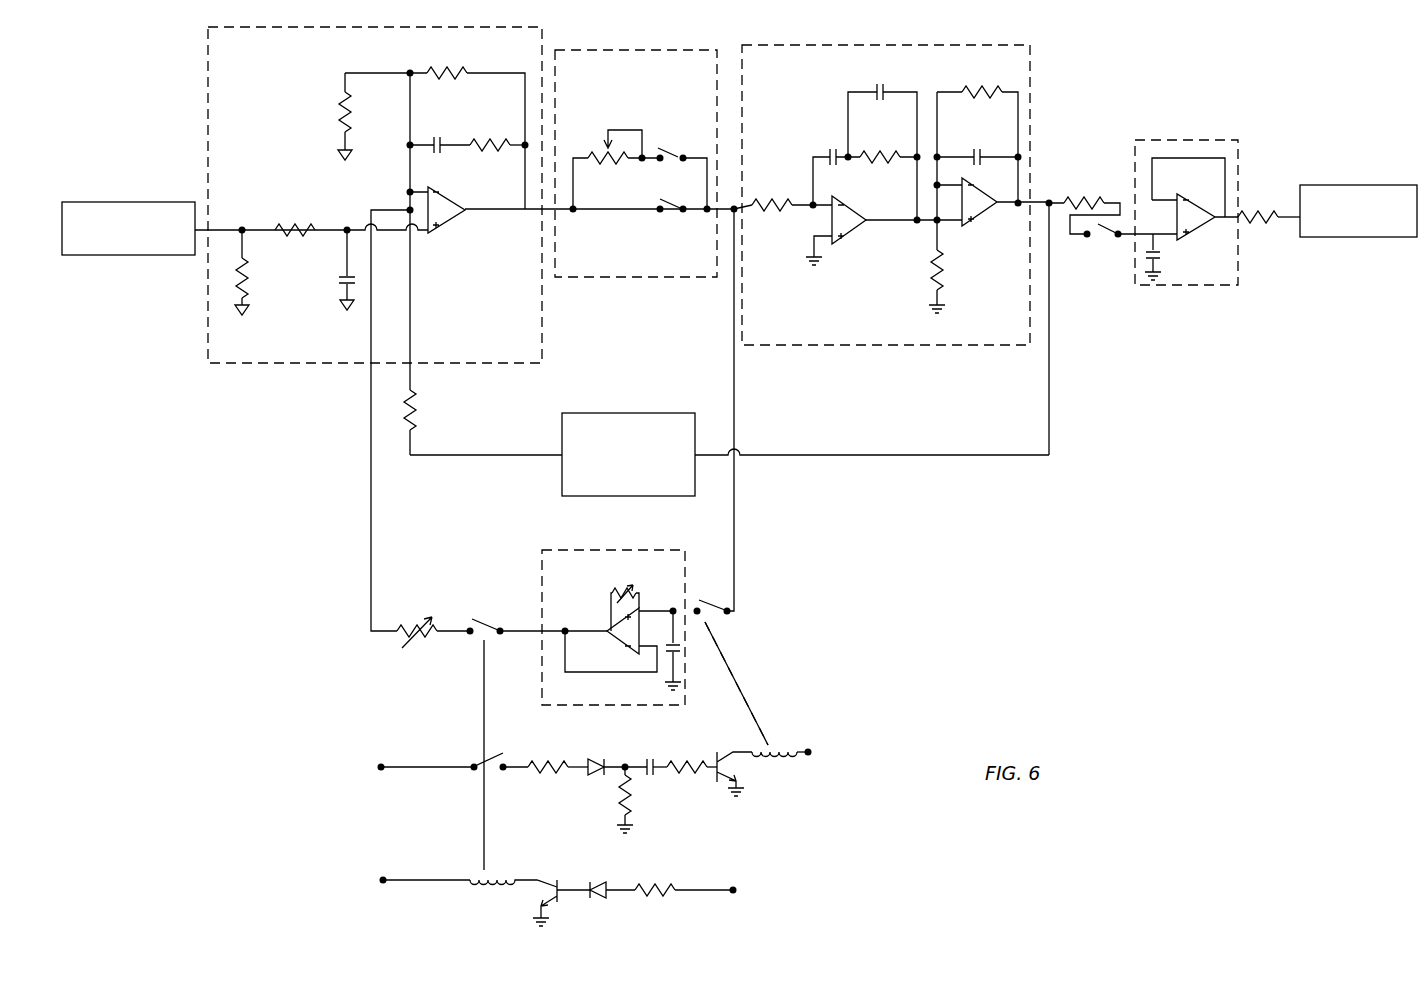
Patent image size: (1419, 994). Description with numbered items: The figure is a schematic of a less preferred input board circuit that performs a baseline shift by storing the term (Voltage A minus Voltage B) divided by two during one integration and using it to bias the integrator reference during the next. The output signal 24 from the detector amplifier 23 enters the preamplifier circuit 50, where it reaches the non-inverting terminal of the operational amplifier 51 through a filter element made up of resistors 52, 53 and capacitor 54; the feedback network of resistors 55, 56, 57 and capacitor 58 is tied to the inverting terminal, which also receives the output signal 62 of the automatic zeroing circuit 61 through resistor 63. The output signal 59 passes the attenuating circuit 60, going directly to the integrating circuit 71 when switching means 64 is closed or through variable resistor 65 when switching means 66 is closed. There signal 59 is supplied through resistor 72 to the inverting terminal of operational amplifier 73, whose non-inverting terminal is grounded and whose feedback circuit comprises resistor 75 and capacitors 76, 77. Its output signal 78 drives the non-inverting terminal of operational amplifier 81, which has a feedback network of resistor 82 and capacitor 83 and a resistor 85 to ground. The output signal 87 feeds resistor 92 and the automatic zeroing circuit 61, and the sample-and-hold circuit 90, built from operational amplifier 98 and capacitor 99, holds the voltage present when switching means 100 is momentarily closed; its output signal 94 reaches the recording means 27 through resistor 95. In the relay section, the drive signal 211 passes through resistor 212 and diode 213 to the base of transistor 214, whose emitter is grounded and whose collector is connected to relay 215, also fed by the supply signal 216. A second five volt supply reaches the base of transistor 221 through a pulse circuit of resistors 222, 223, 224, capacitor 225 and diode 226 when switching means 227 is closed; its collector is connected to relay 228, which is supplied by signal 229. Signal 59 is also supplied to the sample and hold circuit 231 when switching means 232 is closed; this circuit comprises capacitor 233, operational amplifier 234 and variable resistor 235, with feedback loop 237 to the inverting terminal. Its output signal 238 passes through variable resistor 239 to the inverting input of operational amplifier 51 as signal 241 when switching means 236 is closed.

The detector amplifier 23 is at (152, 202).
The output signal 24 is at (238, 228).
The recording means 27 is at (1350, 185).
The preamplifier circuit 50 is at (208, 95).
The operational amplifier 51 is at (445, 226).
The resistor 52 is at (245, 280).
The resistor 53 is at (295, 224).
The capacitor 54 is at (347, 288).
The resistor 55 is at (345, 125).
The resistor 56 is at (447, 70).
The resistor 57 is at (490, 140).
The capacitor 58 is at (436, 140).
The output signal 59 is at (495, 212).
The attenuating circuit 60 is at (630, 50).
The automatic zeroing circuit 61 is at (640, 413).
The output signal 62 is at (452, 458).
The resistor 63 is at (425, 412).
The switching means 64 is at (678, 212).
The variable resistor 65 is at (603, 152).
The switching means 66 is at (672, 150).
The integrating circuit 71 is at (905, 45).
The resistor 72 is at (770, 200).
The operational amplifier 73 is at (848, 240).
The resistor 75 is at (890, 165).
The capacitor 76 is at (870, 88).
The capacitor 77 is at (825, 150).
The output signal 78 is at (890, 228).
The operational amplifier 81 is at (982, 222).
The resistor 82 is at (960, 88).
The capacitor 83 is at (975, 150).
The resistor 85 is at (935, 278).
The output signal 87 is at (1048, 198).
The sample-and-hold circuit 90 is at (1227, 134).
The resistor 92 is at (1084, 196).
The output signal 94 is at (1215, 212).
The resistor 95 is at (1256, 212).
The operational amplifier 98 is at (1195, 235).
The capacitor 99 is at (1148, 268).
The switching means 100 is at (1100, 240).
The drive signal 211 is at (700, 895).
The resistor 212 is at (655, 882).
The diode 213 is at (600, 900).
The transistor 214 is at (556, 878).
The relay 215 is at (487, 888).
The +5 volt power supply signal 216 is at (420, 878).
The transistor 221 is at (716, 785).
The resistor 222 is at (540, 760).
The resistor 223 is at (620, 800).
The resistor 224 is at (693, 760).
The capacitor 225 is at (647, 760).
The diode 226 is at (598, 760).
The switching means 227 is at (472, 762).
The relay 228 is at (782, 748).
The +5V power supply signal 229 is at (790, 760).
The sample and hold circuit 231 is at (542, 555).
The switching means 232 is at (708, 600).
The capacitor 233 is at (685, 660).
The operational amplifier 234 is at (640, 608).
The variable resistor 235 is at (610, 593).
The switching means 236 is at (485, 624).
The feedback loop 237 is at (580, 675).
The output signal 238 is at (530, 630).
The variable resistor 239 is at (425, 648).
The signal 241 is at (371, 560).